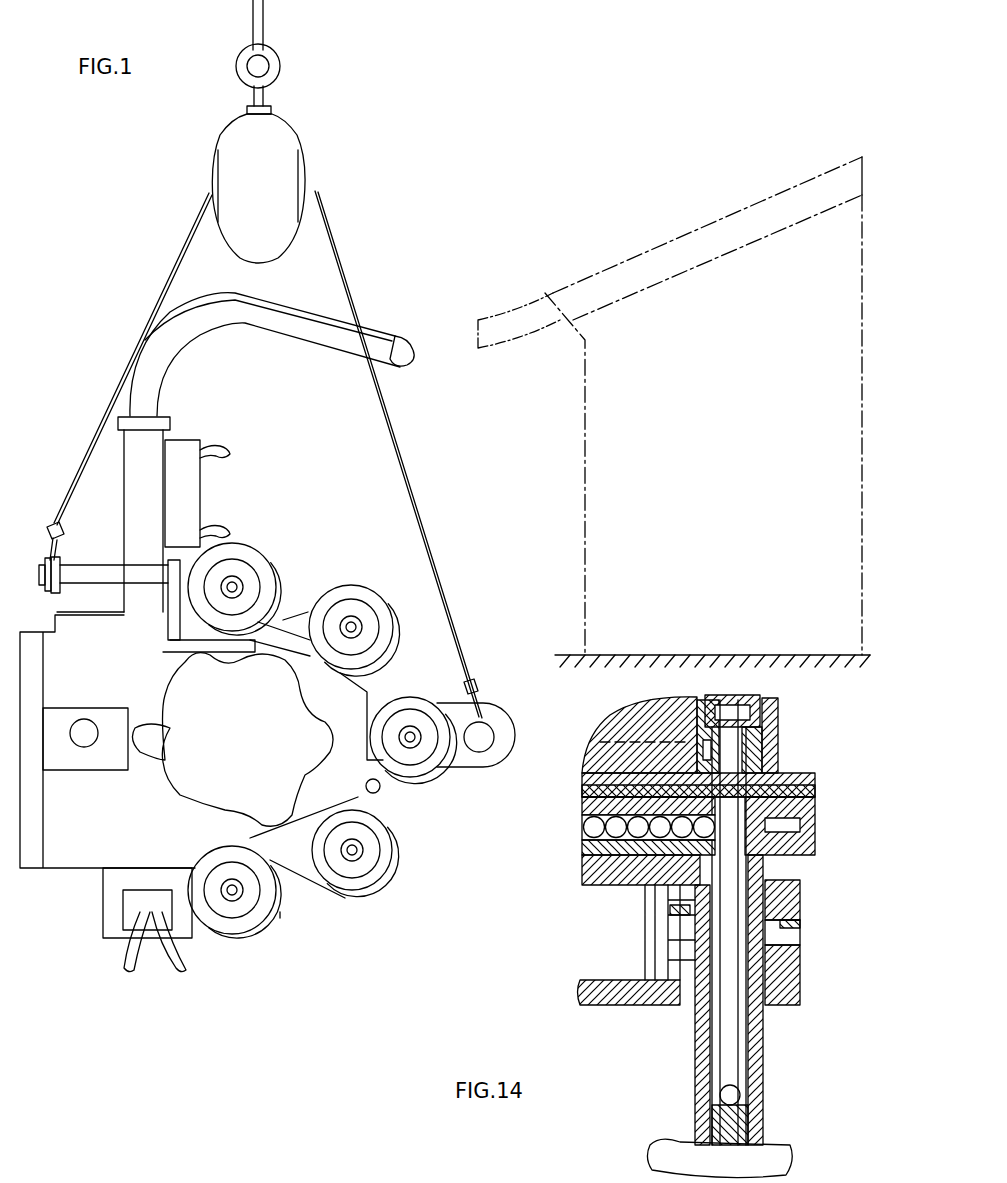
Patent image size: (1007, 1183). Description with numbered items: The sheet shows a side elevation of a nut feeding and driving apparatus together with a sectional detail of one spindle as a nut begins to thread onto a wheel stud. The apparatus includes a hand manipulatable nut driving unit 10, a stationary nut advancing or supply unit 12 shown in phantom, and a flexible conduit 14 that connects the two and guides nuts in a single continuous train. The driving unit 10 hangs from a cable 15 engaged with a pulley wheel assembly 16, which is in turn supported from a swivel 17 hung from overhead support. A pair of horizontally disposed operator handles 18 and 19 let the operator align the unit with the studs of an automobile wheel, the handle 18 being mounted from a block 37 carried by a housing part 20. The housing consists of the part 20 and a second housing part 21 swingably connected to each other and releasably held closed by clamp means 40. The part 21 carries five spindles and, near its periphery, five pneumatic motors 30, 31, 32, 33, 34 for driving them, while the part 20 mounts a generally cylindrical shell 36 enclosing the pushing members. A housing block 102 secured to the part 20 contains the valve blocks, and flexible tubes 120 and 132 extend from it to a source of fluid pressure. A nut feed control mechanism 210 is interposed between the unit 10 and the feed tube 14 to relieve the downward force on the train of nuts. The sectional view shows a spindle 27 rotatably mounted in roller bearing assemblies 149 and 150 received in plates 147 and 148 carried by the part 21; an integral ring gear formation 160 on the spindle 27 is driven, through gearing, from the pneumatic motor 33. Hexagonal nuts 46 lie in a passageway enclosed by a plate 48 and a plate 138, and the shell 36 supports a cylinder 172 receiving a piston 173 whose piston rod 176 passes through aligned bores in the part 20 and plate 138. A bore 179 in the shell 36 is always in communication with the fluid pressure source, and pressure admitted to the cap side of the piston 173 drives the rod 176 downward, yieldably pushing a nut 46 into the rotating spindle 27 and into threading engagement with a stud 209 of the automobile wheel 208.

In FIG. 1, the nut driving unit 10 is at (282, 916).
In FIG. 1, the nut advancing or supply unit 12 is at (697, 289).
In FIG. 1, the flexible conduit 14 is at (268, 326).
In FIG. 1, the cable 15 is at (135, 342).
In FIG. 1, the pulley wheel assembly 16 is at (227, 142).
In FIG. 1, the swivel 17 is at (256, 91).
In FIG. 1, the operator handle 18 is at (86, 746).
In FIG. 1, the operator handle 19 is at (482, 765).
In FIG. 1, the housing part 20 is at (123, 836).
In FIG. 14, the housing part 20 is at (815, 786).
In FIG. 14, the housing part 21 is at (590, 875).
In FIG. 14, the spindle 27 is at (695, 1044).
In FIG. 1, the pneumatic motor 30 is at (215, 862).
In FIG. 1, the pneumatic motor 31 is at (382, 848).
In FIG. 1, the pneumatic motor 32 is at (418, 704).
In FIG. 1, the pneumatic motor 33 is at (370, 600).
In FIG. 1, the pneumatic motor 34 is at (252, 560).
In FIG. 1, the cylindrical shell 36 is at (256, 746).
In FIG. 14, the cylindrical shell 36 is at (640, 716).
In FIG. 1, the block 37 is at (118, 764).
In FIG. 1, the clamp means 40 is at (383, 788).
In FIG. 14, the hexagonal nut 46 is at (585, 826).
In FIG. 14, the plate 48 is at (585, 848).
In FIG. 1, the housing block 102 is at (125, 910).
In FIG. 1, the flexible tube 120 is at (175, 972).
In FIG. 1, the flexible tube 132 is at (122, 963).
In FIG. 14, the plate 138 is at (812, 818).
In FIG. 14, the plate 147 is at (809, 889).
In FIG. 14, the plate 148 is at (809, 972).
In FIG. 14, the roller bearing assembly 149 is at (665, 906).
In FIG. 14, the roller bearing assembly 150 is at (656, 968).
In FIG. 14, the ring gear formation 160 is at (789, 937).
In FIG. 14, the cylinder 172 is at (690, 708).
In FIG. 14, the piston 173 is at (742, 700).
In FIG. 14, the piston rod 176 is at (738, 1046).
In FIG. 14, the bore 179 is at (596, 743).
In FIG. 14, the automobile wheel 208 is at (655, 1154).
In FIG. 14, the wheel stud 209 is at (700, 1125).
In FIG. 1, the nut feed control mechanism 210 is at (208, 422).